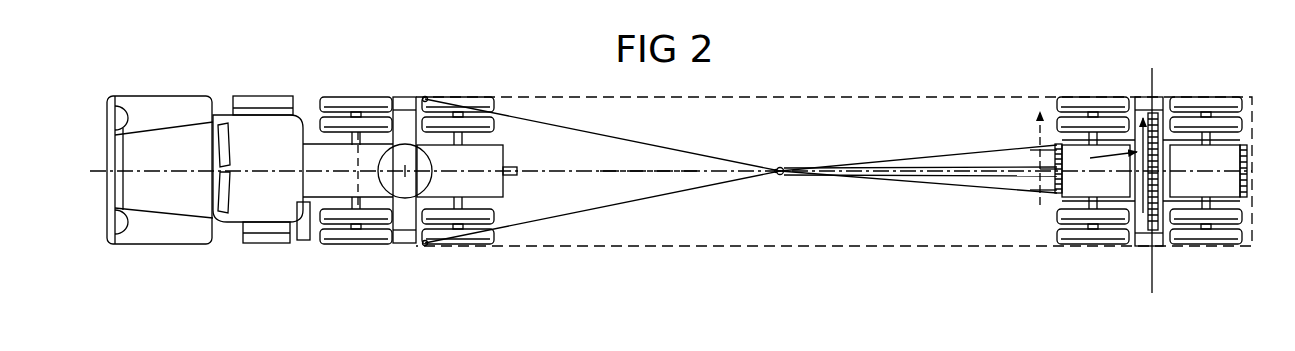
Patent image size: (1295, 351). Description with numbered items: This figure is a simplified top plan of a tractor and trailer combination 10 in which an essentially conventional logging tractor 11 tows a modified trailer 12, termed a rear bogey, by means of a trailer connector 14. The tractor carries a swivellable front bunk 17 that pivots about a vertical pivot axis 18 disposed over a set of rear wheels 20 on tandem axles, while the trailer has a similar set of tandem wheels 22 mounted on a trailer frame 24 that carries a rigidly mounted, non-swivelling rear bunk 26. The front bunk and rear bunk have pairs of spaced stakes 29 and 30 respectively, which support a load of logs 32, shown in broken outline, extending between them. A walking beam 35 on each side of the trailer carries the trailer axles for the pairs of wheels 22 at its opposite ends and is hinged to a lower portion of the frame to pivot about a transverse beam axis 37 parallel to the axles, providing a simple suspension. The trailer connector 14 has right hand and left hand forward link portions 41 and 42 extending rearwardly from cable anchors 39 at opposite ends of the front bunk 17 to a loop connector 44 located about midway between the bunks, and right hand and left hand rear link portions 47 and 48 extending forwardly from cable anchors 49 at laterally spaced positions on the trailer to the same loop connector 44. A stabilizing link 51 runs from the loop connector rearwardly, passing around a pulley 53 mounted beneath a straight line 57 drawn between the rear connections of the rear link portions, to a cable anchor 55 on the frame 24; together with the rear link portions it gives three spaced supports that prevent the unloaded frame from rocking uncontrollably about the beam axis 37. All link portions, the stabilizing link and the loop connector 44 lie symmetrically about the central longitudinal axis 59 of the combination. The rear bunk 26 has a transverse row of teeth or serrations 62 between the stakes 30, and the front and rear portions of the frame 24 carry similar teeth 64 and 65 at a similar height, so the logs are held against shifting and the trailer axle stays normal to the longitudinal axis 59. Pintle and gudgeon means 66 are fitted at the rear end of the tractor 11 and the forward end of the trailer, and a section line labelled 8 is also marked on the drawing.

The section line 8- 8 is at (1088, 163).
The tractor and trailer combination 10 is at (395, 66).
The tractor 11 is at (212, 90).
The trailer 12 is at (1020, 268).
The trailer connector 14 is at (853, 131).
The front bunk 17 is at (350, 166).
The vertical pivot axis 18 is at (413, 172).
The rear wheels 20 is at (463, 92).
The tandem wheels 22 is at (1071, 266).
The trailer frame 24 is at (1220, 160).
The rear bunk 26 is at (1102, 157).
The stakes 29 is at (404, 100).
The stakes 30 is at (1145, 100).
The load of logs 32 is at (690, 96).
The walking beam 35 is at (1057, 144).
The transverse beam axis 37 is at (1155, 78).
The cable anchors 39 is at (428, 96).
The right hand forward link portion 41 is at (588, 128).
The left hand forward link portion 42 is at (588, 210).
The loop connector 44 is at (783, 168).
The right hand rear link portion 47 is at (892, 158).
The left hand rear link portion 48 is at (918, 186).
The cable anchors 49 is at (1055, 149).
The stabilizing link 51 is at (908, 173).
The pulley 53 is at (1050, 173).
The cable anchor 55 is at (1120, 169).
The straight line 57 is at (1045, 164).
The central longitudinal axis 59 is at (625, 171).
The teeth or serrations 62 is at (1160, 180).
The teeth or serrations 64 is at (1064, 190).
The teeth or serrations 65 is at (1245, 168).
The pintle and gudgeon means 66 is at (515, 174).